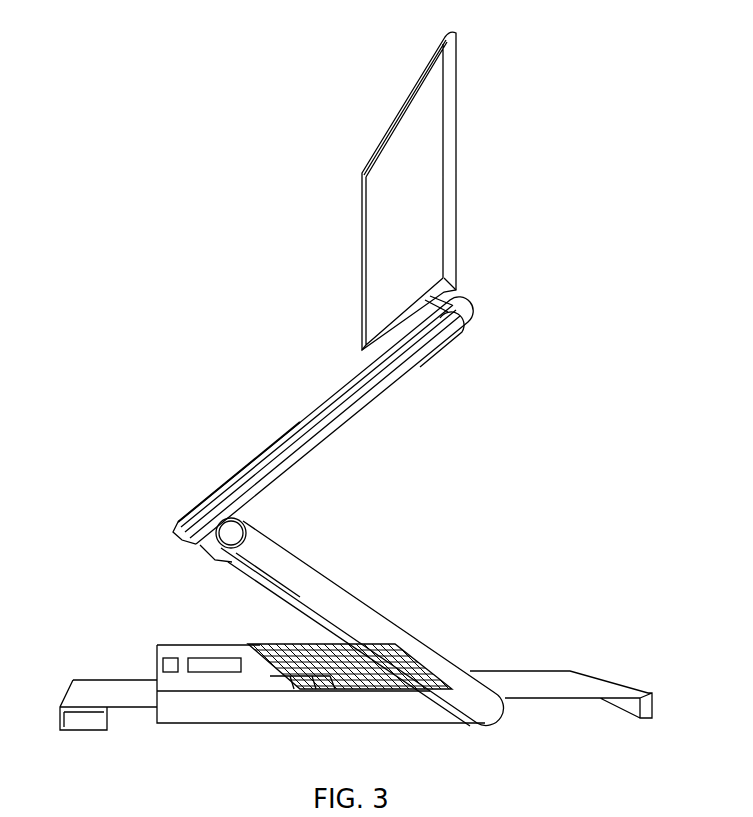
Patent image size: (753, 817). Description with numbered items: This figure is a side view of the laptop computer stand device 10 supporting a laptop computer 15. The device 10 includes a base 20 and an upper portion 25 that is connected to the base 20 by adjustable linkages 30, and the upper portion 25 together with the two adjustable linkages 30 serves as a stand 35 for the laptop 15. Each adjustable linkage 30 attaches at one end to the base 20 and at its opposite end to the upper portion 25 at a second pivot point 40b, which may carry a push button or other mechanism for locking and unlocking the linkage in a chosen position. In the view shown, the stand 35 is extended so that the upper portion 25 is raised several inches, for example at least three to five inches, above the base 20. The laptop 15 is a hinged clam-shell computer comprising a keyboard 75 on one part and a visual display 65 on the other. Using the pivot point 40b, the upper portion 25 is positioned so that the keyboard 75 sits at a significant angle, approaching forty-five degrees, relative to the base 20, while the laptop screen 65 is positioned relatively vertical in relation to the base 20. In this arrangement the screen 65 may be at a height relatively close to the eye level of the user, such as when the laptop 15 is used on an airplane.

The laptop computer stand device 10 is at (45, 313).
The laptop computer 15 is at (362, 234).
The base 20 is at (201, 717).
The upper portion 25 is at (517, 290).
The adjustable linkage 30 is at (358, 620).
The stand 35 is at (652, 293).
The second pivot point 40b is at (233, 538).
The visual display 65 is at (416, 228).
The keyboard 75 is at (221, 484).